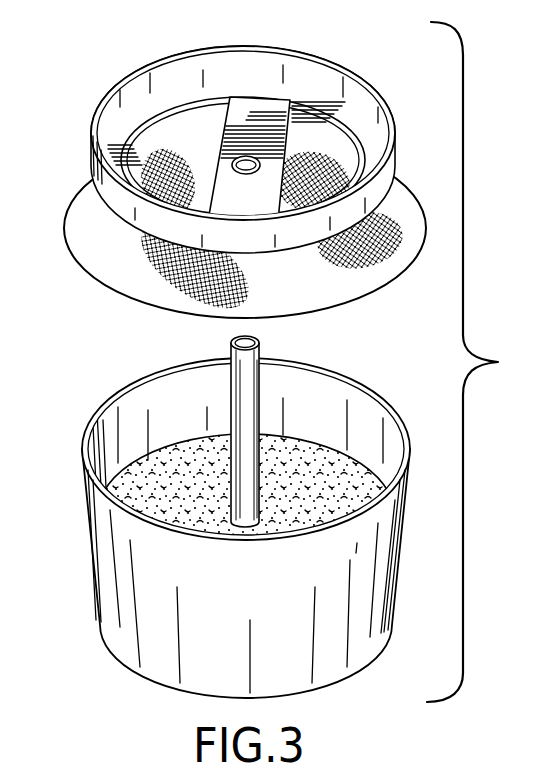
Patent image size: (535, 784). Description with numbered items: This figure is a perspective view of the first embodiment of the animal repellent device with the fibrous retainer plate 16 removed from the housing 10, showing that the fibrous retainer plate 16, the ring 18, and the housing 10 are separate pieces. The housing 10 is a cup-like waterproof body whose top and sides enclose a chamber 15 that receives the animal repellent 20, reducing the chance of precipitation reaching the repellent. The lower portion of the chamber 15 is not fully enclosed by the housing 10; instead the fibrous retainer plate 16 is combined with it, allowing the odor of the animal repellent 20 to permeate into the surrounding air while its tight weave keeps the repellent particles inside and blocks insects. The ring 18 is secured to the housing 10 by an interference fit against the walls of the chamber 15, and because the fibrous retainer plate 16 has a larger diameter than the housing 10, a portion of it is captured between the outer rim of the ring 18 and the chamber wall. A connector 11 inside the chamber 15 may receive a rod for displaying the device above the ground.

The housing 10 is at (252, 587).
The connector 11 is at (238, 379).
The chamber 15 is at (166, 424).
The fibrous retainer plate 16 is at (100, 252).
The ring 18 is at (343, 117).
The animal repellent 20 is at (308, 463).